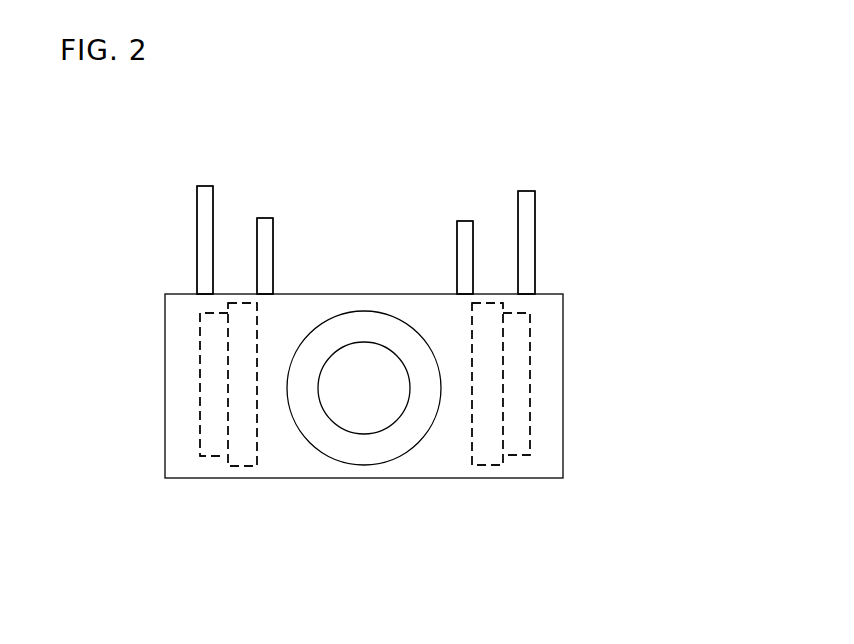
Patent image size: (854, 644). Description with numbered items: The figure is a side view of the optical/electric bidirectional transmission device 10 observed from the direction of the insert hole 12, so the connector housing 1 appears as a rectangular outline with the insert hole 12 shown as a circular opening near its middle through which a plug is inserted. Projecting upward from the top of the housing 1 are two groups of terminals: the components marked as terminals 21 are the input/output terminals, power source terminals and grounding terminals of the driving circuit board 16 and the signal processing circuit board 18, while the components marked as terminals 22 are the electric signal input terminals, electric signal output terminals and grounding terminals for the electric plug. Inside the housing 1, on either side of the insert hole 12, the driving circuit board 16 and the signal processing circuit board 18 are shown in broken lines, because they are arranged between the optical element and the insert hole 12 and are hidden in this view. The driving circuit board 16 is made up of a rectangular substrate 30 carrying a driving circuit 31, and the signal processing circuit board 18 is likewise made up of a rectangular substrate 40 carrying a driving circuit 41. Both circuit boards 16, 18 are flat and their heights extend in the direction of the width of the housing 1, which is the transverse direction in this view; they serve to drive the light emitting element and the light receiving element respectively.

The connector housing 1 is at (564, 305).
The optical/electric bidirectional transmission device 10 is at (186, 172).
The insert hole 12 is at (379, 403).
The driving circuit board 16 is at (186, 418).
The signal processing circuit board 18 is at (541, 428).
The terminals of the circuit boards 21 is at (518, 202).
The terminals for the electric plug 22 is at (457, 237).
The rectangular substrate 30 is at (227, 461).
The driving circuit 31 is at (197, 367).
The rectangular substrate 40 is at (493, 465).
The driving circuit 41 is at (530, 374).